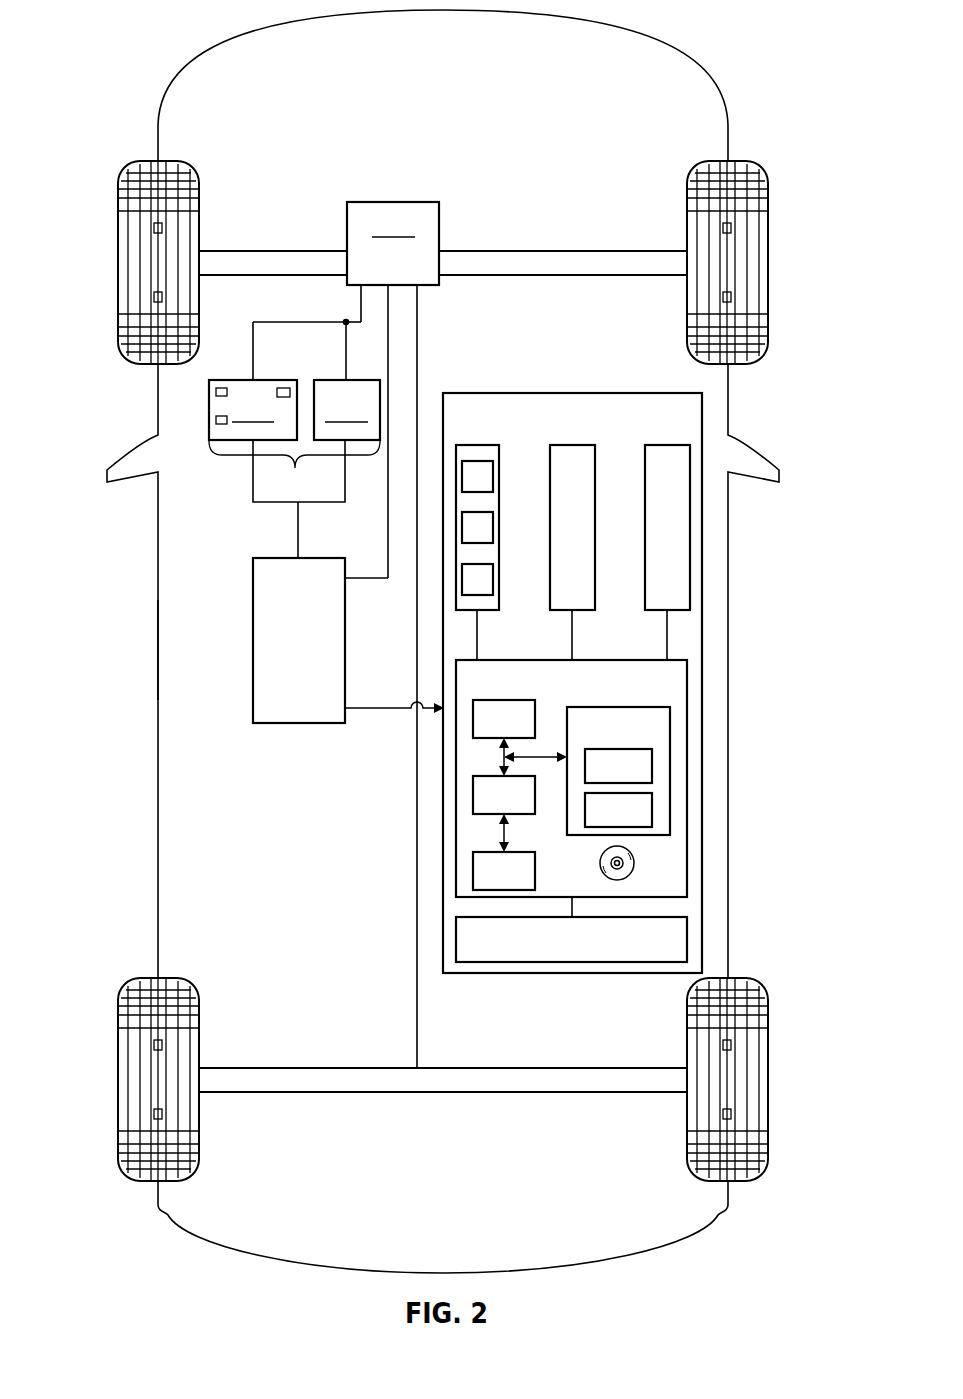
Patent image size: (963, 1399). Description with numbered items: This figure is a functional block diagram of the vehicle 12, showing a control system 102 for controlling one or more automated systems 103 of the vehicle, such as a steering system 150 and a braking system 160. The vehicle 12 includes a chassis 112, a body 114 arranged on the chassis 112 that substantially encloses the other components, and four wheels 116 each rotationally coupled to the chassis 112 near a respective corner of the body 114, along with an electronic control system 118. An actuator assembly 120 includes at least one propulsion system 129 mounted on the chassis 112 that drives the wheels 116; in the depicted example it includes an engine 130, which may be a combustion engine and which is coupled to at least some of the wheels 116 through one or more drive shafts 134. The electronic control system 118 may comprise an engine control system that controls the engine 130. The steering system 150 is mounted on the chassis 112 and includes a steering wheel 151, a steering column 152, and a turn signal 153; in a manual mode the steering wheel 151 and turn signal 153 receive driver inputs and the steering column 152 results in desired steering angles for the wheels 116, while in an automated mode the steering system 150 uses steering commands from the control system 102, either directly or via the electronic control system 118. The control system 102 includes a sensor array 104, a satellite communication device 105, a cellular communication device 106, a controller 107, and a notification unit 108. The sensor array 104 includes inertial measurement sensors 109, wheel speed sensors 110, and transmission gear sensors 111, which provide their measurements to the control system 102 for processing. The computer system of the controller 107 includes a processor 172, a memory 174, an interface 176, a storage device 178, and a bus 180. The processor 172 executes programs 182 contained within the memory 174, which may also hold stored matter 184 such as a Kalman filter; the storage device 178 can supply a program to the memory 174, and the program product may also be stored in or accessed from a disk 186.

The vehicle 12 is at (144, 29).
The control system 102 is at (703, 406).
The automated systems 103 is at (235, 439).
The sensor array 104 is at (502, 477).
The satellite communication device 105 is at (573, 444).
The cellular communication device 106 is at (667, 444).
The controller 107 is at (688, 672).
The notification unit 108 is at (688, 935).
The inertial measurement sensors 109 is at (494, 477).
The wheel speed sensors 110 is at (494, 528).
The transmission gear sensors 111 is at (494, 579).
The chassis 112 is at (408, 1011).
The body 114 is at (157, 650).
The wheels 116 is at (117, 262).
The electronic control system 118 is at (252, 638).
The actuator assembly 120 is at (433, 294).
The propulsion system 129 is at (383, 225).
The engine 130 is at (381, 201).
The drive shafts 134 is at (254, 250).
The steering system 150 is at (201, 382).
The steering wheel 151 is at (221, 387).
The steering column 152 is at (208, 418).
The turn signal 153 is at (283, 387).
The braking system 160 is at (347, 410).
The processor 172 is at (472, 719).
The memory 174 is at (671, 712).
The interface 176 is at (472, 796).
The storage device 178 is at (472, 872).
The bus 180 is at (497, 757).
The programs 182 is at (653, 766).
The stored matter 184 is at (653, 810).
The disk 186 is at (634, 862).